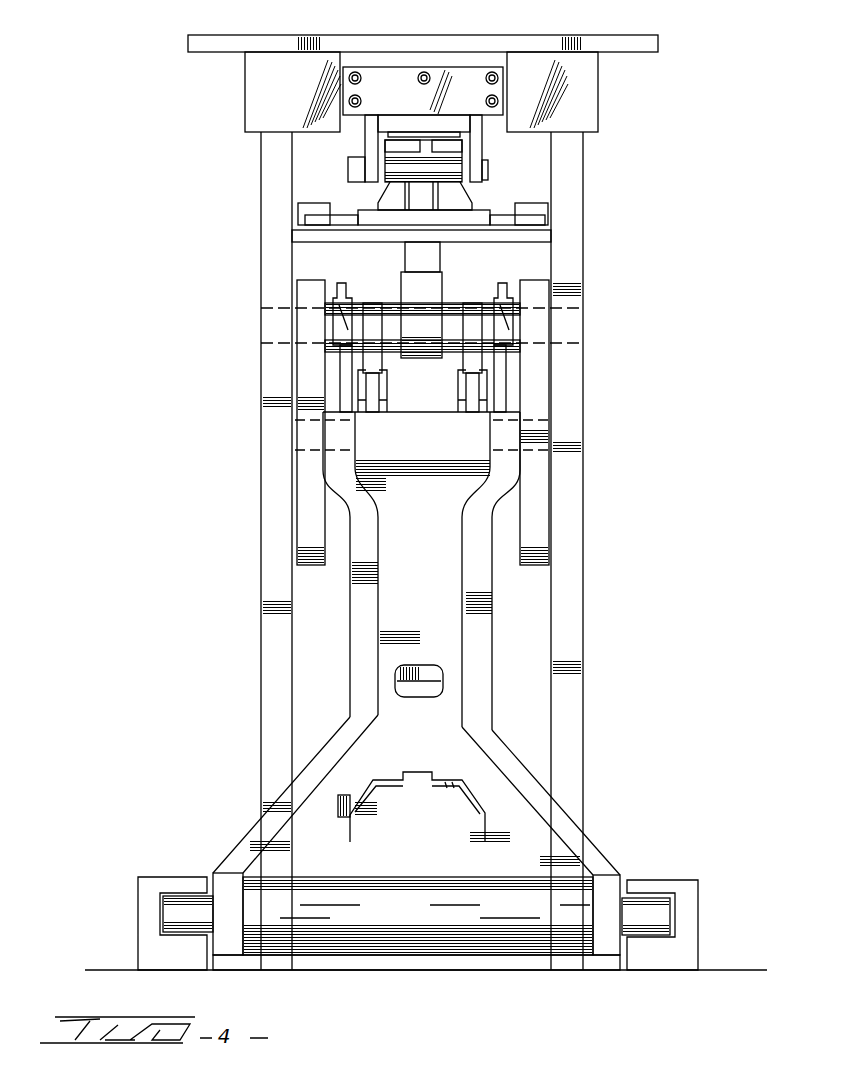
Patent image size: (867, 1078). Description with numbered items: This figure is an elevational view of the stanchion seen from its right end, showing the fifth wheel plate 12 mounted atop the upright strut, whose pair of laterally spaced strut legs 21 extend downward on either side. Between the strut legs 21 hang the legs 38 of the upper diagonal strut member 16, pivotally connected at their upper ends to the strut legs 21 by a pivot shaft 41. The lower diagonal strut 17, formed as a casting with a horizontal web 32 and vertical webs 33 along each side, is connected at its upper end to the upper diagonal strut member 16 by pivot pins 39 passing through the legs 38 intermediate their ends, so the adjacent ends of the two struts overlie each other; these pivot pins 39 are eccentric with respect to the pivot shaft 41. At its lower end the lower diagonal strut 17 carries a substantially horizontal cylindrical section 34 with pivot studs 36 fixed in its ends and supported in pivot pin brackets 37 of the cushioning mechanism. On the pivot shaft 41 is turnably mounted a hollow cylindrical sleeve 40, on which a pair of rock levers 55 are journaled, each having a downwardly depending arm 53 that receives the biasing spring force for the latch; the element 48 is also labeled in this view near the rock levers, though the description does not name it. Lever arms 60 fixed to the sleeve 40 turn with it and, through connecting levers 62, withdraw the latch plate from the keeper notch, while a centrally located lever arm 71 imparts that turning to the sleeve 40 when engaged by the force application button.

The fifth wheel plate 12 is at (204, 21).
The upper diagonal strut member 16 is at (553, 367).
The lower diagonal strut 17 is at (504, 744).
The strut legs 21 is at (572, 387).
The horizontal web 32 is at (440, 632).
The vertical webs 33 is at (360, 678).
The cylindrical section 34 is at (575, 905).
The pivot studs 36 is at (185, 905).
The pivot pin brackets 37 is at (150, 910).
The legs 38 is at (305, 500).
The pivot pins 39 is at (305, 432).
The hollow cylindrical sleeve 40 is at (445, 302).
The pivot shaft 41 is at (272, 323).
The bearing 48 is at (335, 380).
The downwardly depending arm 53 is at (350, 362).
The rock levers 55 is at (343, 283).
The lever arms 60 is at (372, 303).
The connecting levers 62 is at (458, 392).
The lever arm 71 is at (435, 287).